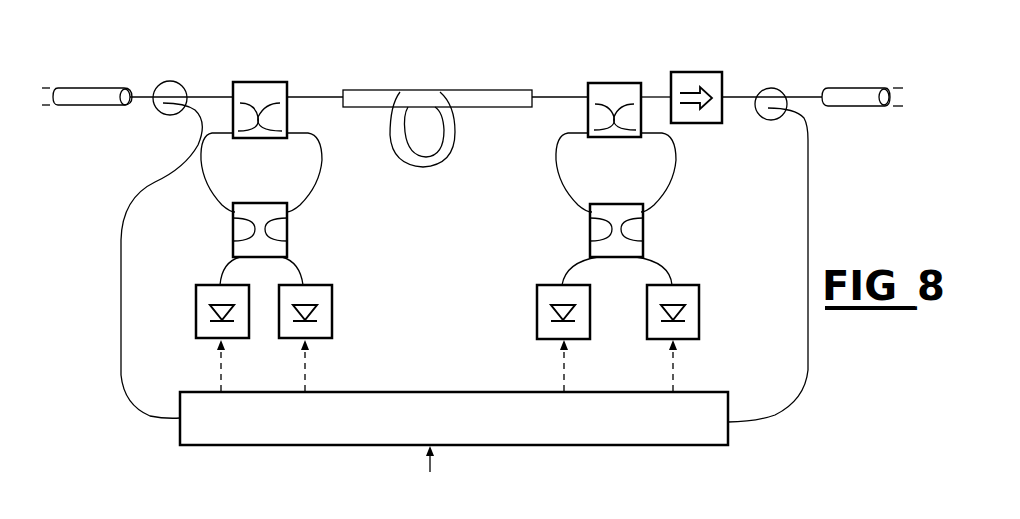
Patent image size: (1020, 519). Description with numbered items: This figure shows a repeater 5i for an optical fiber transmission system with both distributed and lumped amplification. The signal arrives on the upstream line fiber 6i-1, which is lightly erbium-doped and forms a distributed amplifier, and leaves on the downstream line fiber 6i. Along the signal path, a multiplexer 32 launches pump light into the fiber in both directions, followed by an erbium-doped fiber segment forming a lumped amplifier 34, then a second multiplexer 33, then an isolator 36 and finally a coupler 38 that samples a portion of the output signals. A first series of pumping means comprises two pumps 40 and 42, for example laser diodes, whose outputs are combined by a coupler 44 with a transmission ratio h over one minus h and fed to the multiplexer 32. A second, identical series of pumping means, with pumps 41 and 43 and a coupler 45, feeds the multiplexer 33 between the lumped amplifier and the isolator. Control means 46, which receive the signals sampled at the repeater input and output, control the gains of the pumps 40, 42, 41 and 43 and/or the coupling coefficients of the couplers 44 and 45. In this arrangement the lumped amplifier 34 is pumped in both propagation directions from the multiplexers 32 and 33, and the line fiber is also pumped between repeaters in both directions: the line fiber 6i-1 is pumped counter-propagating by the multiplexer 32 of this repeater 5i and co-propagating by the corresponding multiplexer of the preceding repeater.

The line fiber 6i-1 is at (89, 86).
The line fiber 6i is at (856, 80).
The multiplexer 32 is at (250, 82).
The multiplexer 33 is at (618, 83).
The lumped amplifier 34 is at (433, 167).
The isolator 36 is at (702, 72).
The coupler 38 is at (774, 87).
The pump 40 is at (196, 308).
The pump 41 is at (537, 305).
The pump 42 is at (332, 316).
The pump 43 is at (699, 302).
The coupler 44 is at (233, 228).
The coupler 45 is at (645, 228).
The control means 46 is at (732, 397).
The repeater 5i is at (444, 461).